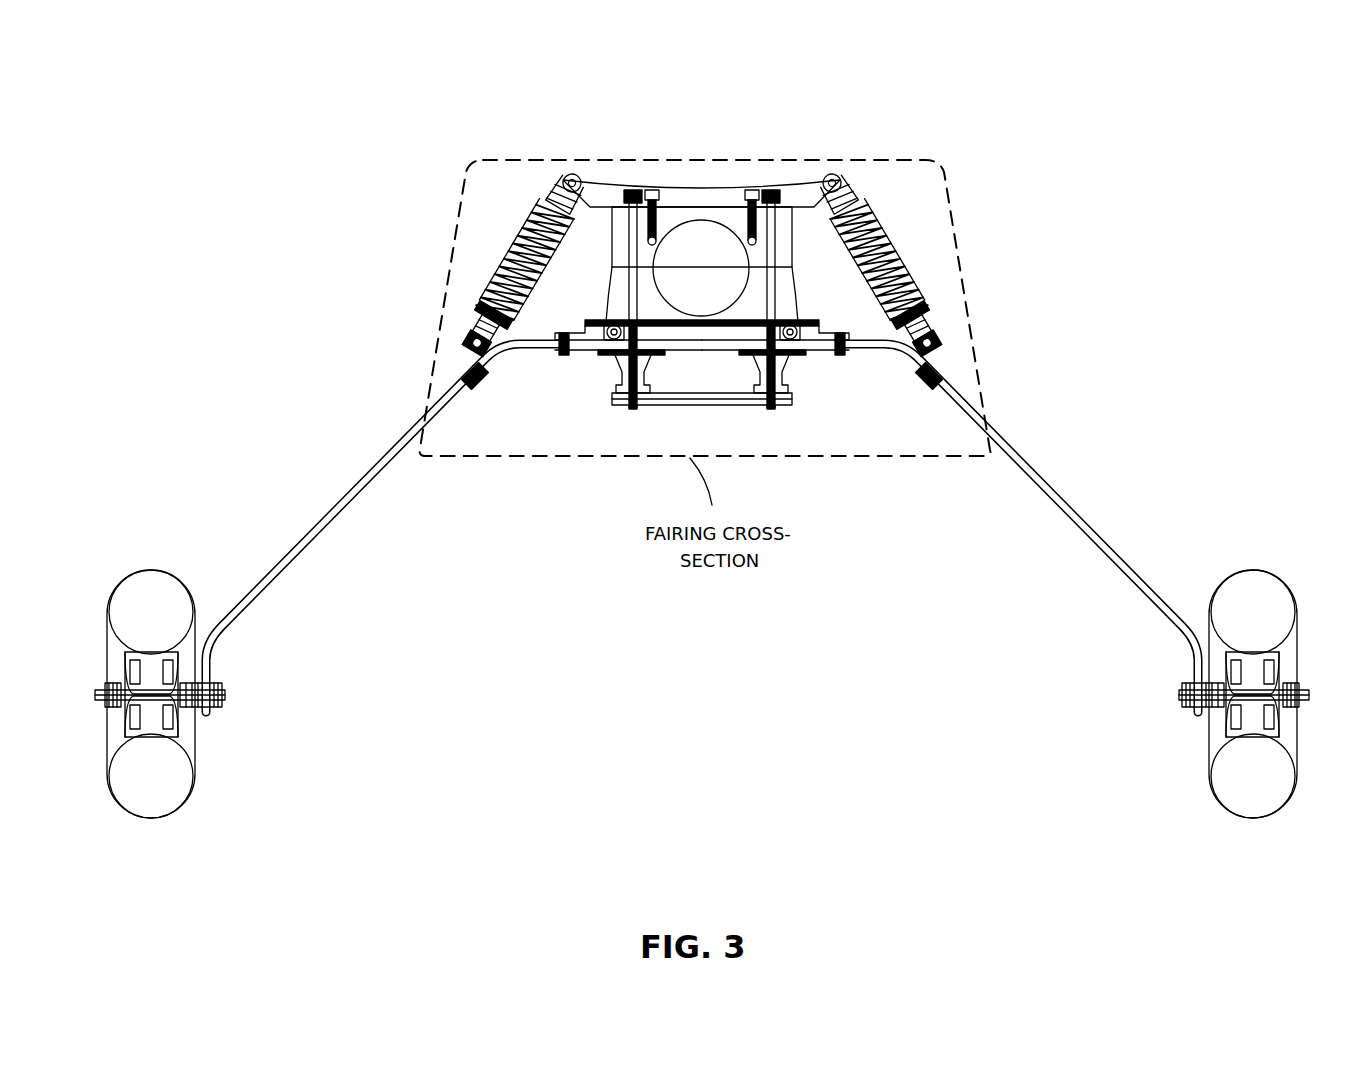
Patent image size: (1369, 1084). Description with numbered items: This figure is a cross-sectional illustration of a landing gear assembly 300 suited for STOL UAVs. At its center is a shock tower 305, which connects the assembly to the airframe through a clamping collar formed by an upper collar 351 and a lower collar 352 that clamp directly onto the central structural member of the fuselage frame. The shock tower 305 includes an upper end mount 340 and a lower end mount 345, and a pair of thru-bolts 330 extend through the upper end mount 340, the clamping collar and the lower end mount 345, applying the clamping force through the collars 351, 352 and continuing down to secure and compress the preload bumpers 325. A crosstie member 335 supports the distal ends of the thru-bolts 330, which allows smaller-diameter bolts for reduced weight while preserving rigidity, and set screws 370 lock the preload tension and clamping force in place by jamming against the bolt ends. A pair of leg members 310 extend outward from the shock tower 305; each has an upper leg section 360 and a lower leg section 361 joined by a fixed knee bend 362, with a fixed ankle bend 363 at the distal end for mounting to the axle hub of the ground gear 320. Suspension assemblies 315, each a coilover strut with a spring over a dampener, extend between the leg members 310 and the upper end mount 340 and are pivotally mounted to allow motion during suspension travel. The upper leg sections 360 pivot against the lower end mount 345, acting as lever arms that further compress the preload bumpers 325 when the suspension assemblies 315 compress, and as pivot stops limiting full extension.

The landing gear assembly 300 is at (1146, 92).
The shock tower 305 is at (728, 276).
The leg member 310 is at (1128, 410).
The suspension assembly 315 is at (952, 158).
The ground gear 320 is at (240, 770).
The preload bumper 325 is at (612, 368).
The thru-bolt 330 is at (630, 190).
The crosstie member 335 is at (716, 406).
The upper end mount 340 is at (689, 185).
The lower end mount 345 is at (706, 336).
The upper collar 351 is at (792, 243).
The lower collar 352 is at (798, 298).
The upper leg section 360 is at (568, 356).
The lower leg section 361 is at (344, 523).
The fixed knee bend 362 is at (518, 360).
The fixed ankle bend 363 is at (214, 656).
The set screw 370 is at (629, 410).